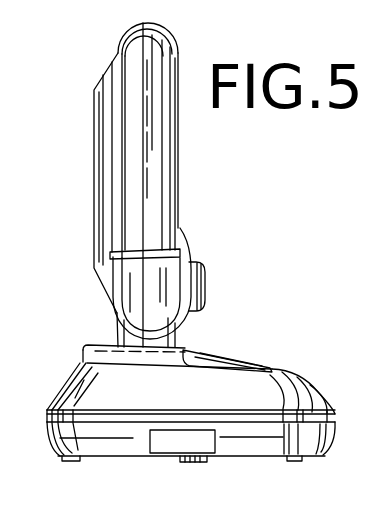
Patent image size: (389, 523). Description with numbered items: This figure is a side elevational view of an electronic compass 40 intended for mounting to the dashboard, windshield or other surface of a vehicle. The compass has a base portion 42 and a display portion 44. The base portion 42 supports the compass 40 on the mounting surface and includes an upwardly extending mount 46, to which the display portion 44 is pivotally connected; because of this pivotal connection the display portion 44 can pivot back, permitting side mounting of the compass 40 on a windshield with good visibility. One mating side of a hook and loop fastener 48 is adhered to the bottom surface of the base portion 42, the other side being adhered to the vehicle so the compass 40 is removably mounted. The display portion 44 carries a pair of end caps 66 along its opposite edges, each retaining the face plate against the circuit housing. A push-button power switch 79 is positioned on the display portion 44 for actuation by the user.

The electronic compass 40 is at (188, 48).
The base portion 42 is at (43, 390).
The display portion 44 is at (73, 112).
The mount 46 is at (184, 334).
The hook and loop fastener 48 is at (215, 461).
The end cap 66 is at (152, 133).
The power switch 79 is at (206, 284).